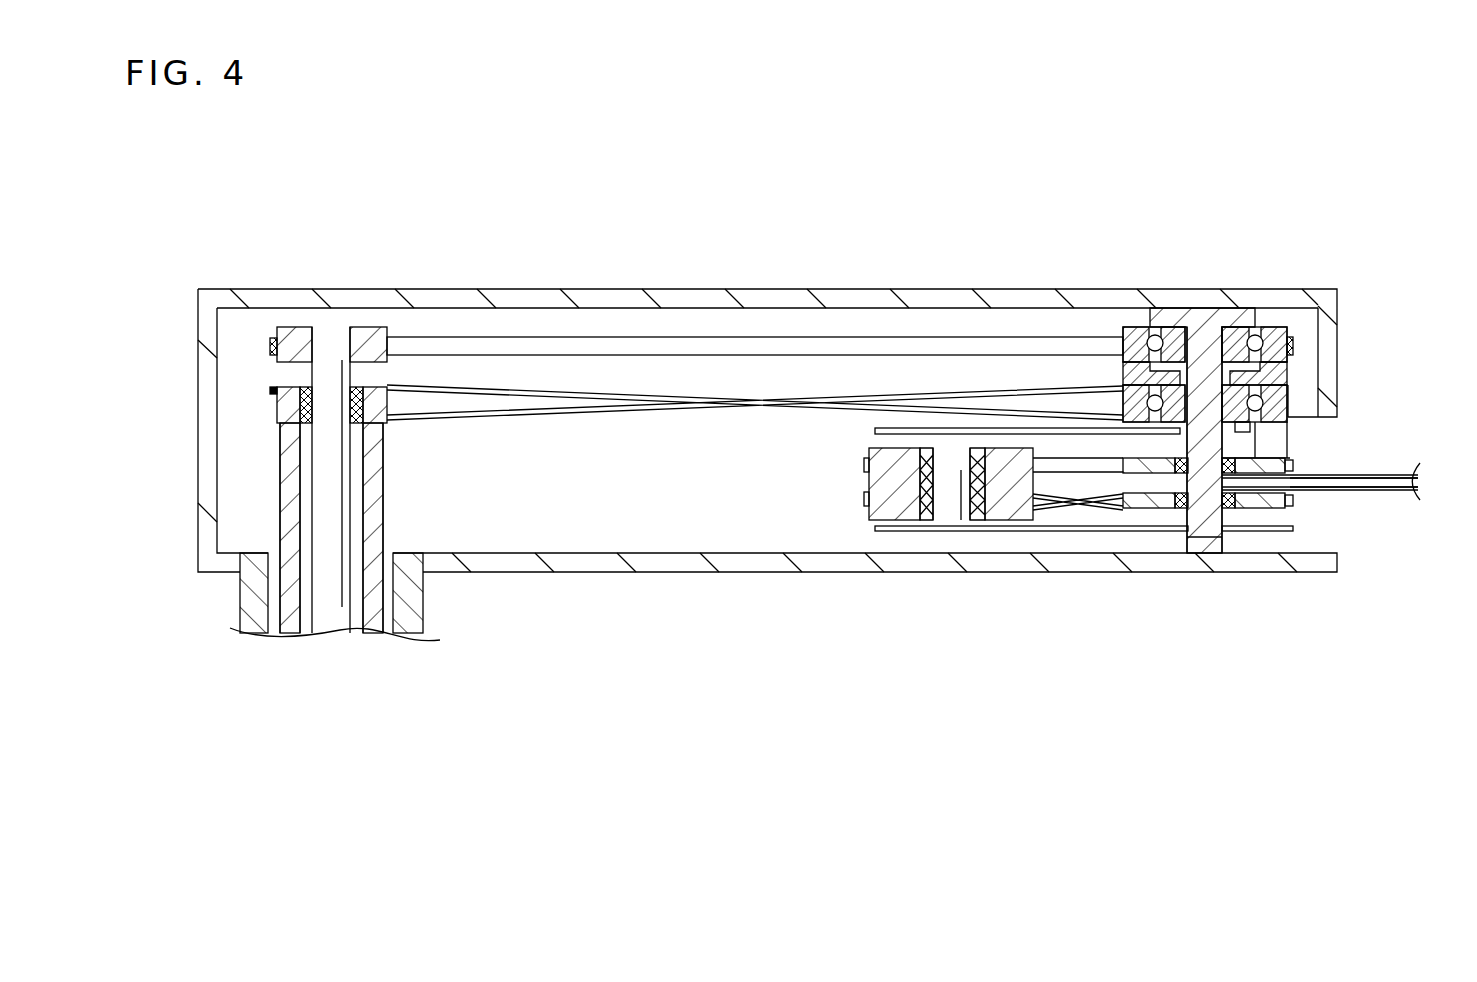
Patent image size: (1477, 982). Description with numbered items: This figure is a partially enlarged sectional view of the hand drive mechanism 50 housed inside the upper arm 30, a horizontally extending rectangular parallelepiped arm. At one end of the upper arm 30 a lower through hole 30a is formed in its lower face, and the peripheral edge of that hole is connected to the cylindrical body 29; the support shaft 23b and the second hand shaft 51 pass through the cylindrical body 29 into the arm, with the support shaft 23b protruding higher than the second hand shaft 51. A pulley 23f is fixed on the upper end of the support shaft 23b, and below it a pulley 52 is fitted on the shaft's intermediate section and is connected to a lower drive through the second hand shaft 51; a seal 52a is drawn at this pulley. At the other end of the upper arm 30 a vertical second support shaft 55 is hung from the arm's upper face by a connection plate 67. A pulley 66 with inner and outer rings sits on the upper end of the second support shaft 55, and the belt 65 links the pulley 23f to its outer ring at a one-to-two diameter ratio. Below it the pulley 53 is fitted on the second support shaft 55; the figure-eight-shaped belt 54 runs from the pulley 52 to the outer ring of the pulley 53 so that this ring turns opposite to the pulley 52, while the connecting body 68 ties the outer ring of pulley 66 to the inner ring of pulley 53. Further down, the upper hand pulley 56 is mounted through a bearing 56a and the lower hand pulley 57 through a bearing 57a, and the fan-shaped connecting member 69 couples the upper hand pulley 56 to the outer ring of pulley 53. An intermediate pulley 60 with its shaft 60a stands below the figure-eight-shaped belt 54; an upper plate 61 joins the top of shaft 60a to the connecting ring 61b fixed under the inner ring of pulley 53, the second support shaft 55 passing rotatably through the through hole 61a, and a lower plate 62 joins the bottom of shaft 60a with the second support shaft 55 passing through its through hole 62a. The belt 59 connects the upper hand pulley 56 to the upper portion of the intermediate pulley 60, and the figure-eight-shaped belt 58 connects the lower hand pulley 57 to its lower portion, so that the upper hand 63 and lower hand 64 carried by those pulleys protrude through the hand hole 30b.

The support shaft 23b is at (333, 627).
The pulley 23f is at (297, 327).
The cylindrical body 29 is at (425, 597).
The upper arm 30 is at (534, 300).
The lower through hole 30a is at (240, 583).
The hand hole 30b is at (1336, 420).
The hand drive mechanism 50 is at (680, 512).
The second hand shaft 51 is at (293, 632).
The pulley 52 is at (283, 415).
The seal 52a is at (355, 387).
The pulley 53 is at (1288, 403).
The 8-shaped belt 54 is at (848, 397).
The second support shaft 55 is at (1208, 550).
The upper hand pulley 56 is at (1275, 491).
The bearing 56a is at (1172, 478).
The lower hand pulley 57 is at (1268, 508).
The bearing 57a is at (1228, 508).
The 8-shaped belt 58 is at (1082, 505).
The belt 59 is at (1045, 458).
The intermediate pulley 60 is at (1005, 518).
The shaft 60a is at (948, 515).
The upper plate 61 is at (978, 428).
The through hole 61a is at (1200, 425).
The connecting ring 61b is at (1252, 431).
The lower plate 62 is at (890, 525).
The through hole 62a is at (1190, 535).
The upper hand 63 is at (1397, 476).
The lower hand 64 is at (1380, 491).
The belt 65 is at (700, 345).
The pulley 66 is at (1152, 327).
The connection plate 67 is at (1243, 308).
The connecting body 68 is at (1288, 370).
The connecting member 69 is at (1288, 455).